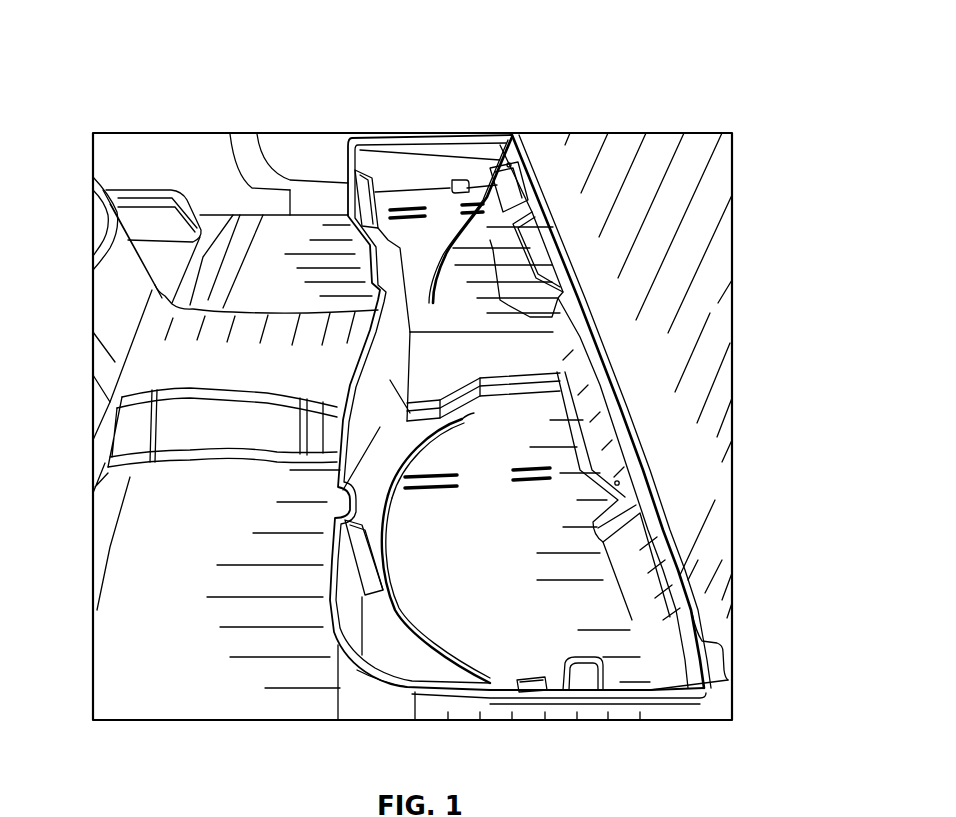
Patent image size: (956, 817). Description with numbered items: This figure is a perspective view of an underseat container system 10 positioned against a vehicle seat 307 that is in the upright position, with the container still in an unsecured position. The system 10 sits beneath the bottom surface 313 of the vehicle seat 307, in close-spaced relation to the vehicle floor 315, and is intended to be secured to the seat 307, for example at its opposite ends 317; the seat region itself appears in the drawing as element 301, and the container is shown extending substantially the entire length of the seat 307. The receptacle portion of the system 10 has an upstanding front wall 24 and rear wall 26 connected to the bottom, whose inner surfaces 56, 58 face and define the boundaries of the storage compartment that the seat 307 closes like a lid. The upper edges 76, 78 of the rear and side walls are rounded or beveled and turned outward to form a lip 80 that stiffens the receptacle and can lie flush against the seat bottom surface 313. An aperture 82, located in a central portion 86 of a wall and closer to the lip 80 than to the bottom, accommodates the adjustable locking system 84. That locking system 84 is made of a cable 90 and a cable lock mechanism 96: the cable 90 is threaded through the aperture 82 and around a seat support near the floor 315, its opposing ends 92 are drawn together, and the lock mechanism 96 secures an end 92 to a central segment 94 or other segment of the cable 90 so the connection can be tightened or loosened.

The underseat container system 10 is at (345, 155).
The front wall 24 is at (620, 432).
The rear wall 26 is at (342, 608).
The inner surface of rear wall 56 is at (357, 397).
The inner surface of side wall 58 is at (642, 556).
The upper edge of rear wall 76 is at (340, 495).
The upper edge of side wall 78 is at (410, 143).
The lip 80 is at (362, 145).
The aperture 82 is at (632, 480).
The locking system 84 is at (405, 382).
The central portion of front wall 86 is at (590, 382).
The cable 90 is at (505, 140).
The cable end 92 is at (474, 413).
The central segment of cable 94 is at (413, 622).
The cable lock mechanism 96 is at (535, 677).
The seat 301 is at (172, 155).
The vehicle seat 307 is at (716, 268).
The bottom surface of vehicle seat 313 is at (716, 428).
The vehicle floor 315 is at (167, 702).
The opposite ends of vehicle seat 317 is at (535, 145).